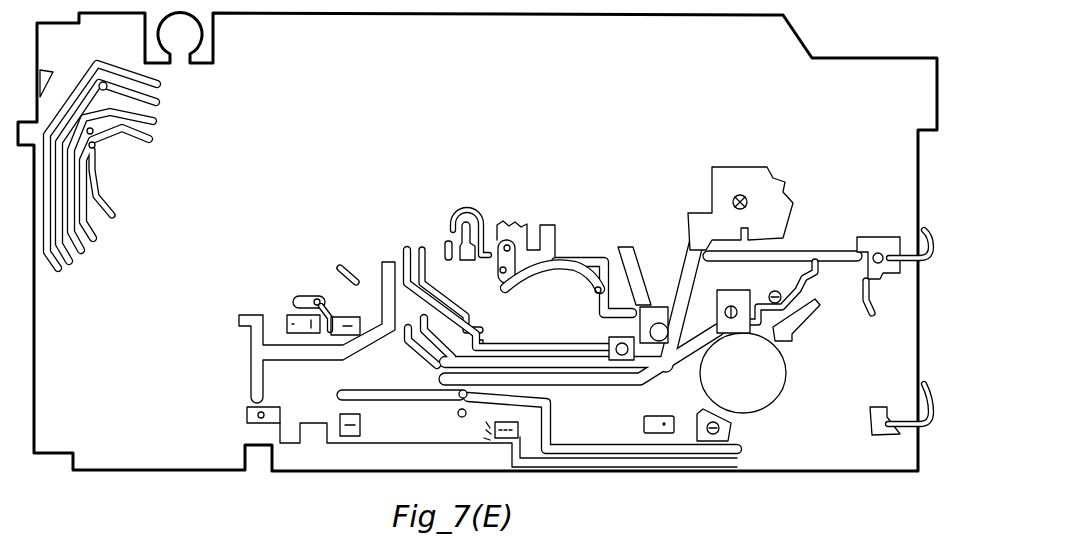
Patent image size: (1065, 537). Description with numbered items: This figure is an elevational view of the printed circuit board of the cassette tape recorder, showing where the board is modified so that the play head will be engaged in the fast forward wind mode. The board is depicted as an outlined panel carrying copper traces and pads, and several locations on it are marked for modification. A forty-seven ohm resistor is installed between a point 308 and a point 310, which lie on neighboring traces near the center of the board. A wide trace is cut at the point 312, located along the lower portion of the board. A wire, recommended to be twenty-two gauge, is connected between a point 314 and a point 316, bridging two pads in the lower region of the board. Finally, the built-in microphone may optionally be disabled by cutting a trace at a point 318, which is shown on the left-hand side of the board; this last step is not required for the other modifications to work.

The point 308 is at (658, 320).
The point 310 is at (615, 342).
The point 312 is at (480, 432).
The point 314 is at (660, 416).
The point 316 is at (503, 436).
The point 318 is at (342, 309).